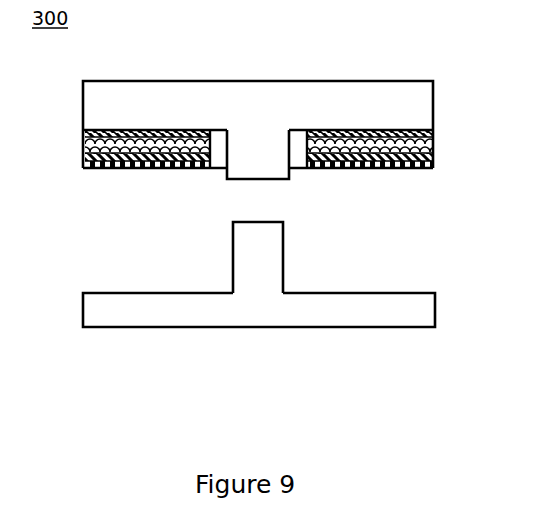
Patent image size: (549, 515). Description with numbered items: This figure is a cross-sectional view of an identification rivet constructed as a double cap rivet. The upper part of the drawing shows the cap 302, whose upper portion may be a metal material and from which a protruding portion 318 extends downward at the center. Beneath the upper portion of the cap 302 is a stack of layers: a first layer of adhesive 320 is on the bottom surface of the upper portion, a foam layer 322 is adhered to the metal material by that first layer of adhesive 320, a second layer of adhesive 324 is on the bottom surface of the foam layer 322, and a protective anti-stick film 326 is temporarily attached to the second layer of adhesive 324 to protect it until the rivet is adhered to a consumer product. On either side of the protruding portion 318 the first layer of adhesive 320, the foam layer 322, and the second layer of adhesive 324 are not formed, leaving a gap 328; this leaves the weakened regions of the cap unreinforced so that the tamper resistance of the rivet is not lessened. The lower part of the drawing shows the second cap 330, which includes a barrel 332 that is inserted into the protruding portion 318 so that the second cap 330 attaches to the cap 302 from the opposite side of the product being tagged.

The cap 302 is at (417, 92).
The protruding portion 318 is at (233, 182).
The first layer of adhesive 320 is at (434, 123).
The foam layer 322 is at (434, 140).
The second layer of adhesive 324 is at (433, 153).
The protective anti-stick film 326 is at (433, 167).
The gap 328 is at (298, 153).
The second cap 330 is at (368, 308).
The barrel 332 is at (285, 253).